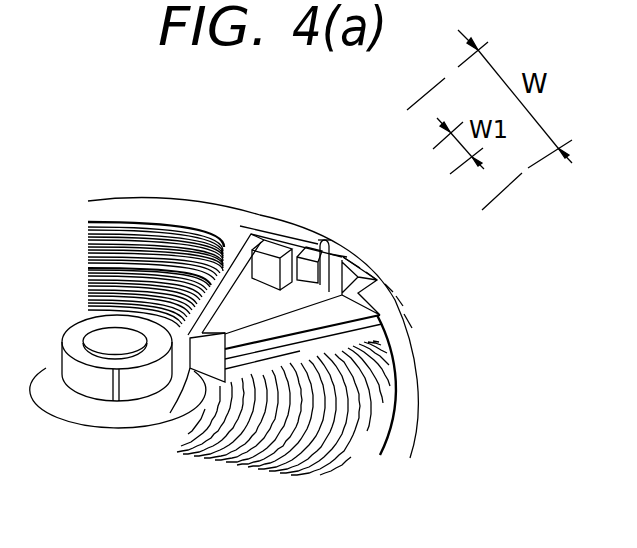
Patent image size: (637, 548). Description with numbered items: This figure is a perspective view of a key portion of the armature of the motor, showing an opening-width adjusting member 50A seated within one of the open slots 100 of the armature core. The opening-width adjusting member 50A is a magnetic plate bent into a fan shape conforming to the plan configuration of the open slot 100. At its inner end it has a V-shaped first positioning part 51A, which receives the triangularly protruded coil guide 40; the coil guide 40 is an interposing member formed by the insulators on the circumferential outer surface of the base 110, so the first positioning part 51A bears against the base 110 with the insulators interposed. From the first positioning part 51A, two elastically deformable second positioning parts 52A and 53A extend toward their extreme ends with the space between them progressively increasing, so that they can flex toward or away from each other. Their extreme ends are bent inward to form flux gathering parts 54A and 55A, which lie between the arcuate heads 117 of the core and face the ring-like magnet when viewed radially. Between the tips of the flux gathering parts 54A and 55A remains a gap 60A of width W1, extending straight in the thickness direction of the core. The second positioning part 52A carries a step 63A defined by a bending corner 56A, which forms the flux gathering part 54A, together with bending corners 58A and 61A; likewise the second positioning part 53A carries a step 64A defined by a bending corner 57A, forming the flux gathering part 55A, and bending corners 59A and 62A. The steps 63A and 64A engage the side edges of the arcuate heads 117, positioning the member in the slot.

The coil guide 40 is at (207, 358).
The opening-width adjusting member 50A is at (313, 331).
The first positioning part 51A is at (232, 335).
The second positioning part 52A is at (222, 238).
The second positioning part 53A is at (396, 402).
The flux gathering part 54A is at (327, 288).
The flux gathering part 55A is at (356, 262).
The bending corner 56A is at (306, 234).
The bending corner 57A is at (380, 281).
The bending corner 58A is at (262, 238).
The bending corner 59A is at (412, 322).
The gap 60A is at (347, 255).
The bending corner 61A is at (301, 238).
The bending corner 62A is at (395, 293).
The step 63A is at (290, 238).
The step 64A is at (405, 304).
The open slot 100 is at (180, 338).
The base 110 is at (110, 428).
The arcuate head 117 is at (123, 198).